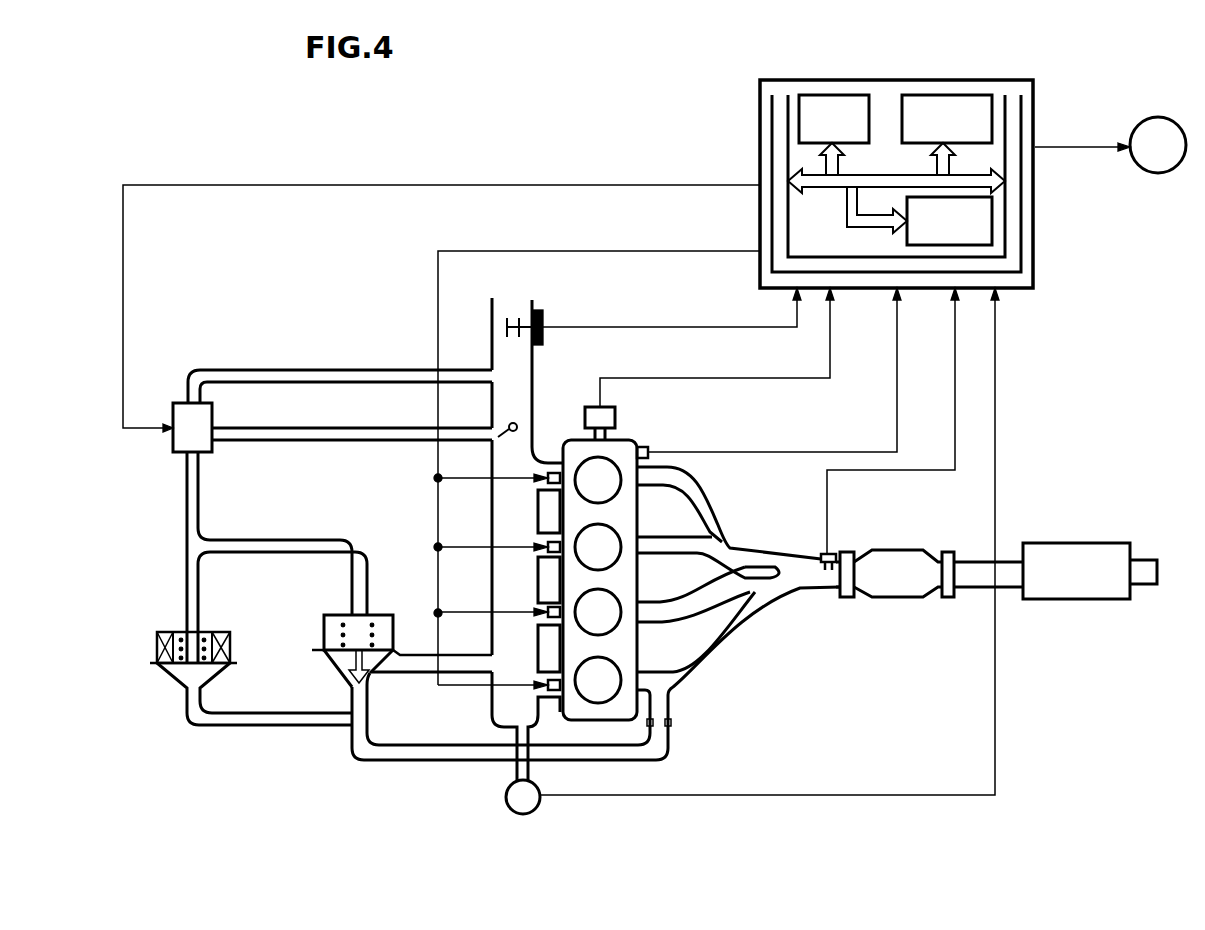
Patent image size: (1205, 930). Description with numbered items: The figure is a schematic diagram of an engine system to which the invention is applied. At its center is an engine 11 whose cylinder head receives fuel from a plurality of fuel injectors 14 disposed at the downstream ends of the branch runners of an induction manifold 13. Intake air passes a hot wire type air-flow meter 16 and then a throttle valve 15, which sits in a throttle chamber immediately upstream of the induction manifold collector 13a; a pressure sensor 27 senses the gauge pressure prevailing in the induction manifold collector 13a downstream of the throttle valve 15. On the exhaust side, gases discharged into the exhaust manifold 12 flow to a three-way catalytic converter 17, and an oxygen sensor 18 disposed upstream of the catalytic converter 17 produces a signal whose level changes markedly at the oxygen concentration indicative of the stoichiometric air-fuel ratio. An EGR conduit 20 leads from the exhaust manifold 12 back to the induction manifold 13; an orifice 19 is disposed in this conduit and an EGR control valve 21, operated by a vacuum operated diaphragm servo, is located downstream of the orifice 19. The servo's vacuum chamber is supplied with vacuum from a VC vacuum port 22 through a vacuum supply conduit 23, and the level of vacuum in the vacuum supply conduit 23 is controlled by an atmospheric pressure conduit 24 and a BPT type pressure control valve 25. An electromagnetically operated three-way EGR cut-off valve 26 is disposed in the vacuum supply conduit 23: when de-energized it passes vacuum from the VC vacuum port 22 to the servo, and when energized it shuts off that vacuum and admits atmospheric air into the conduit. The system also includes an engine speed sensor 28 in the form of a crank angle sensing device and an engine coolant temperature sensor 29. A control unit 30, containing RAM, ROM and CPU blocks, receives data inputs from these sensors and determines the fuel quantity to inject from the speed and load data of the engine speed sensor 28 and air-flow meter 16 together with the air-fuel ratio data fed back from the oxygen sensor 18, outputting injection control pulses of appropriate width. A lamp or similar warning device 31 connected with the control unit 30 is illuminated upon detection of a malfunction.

The engine 11 is at (623, 648).
The exhaust manifold 12 is at (740, 548).
The induction manifold 13 is at (517, 380).
The induction manifold collector 13a is at (487, 698).
The fuel injectors 14 is at (547, 538).
The throttle valve 15 is at (515, 422).
The hot wire type air-flow meter 16 is at (545, 322).
The three-way catalytic converter 17 is at (900, 585).
The oxygen sensor 18 is at (830, 553).
The orifice 19 is at (672, 738).
The EGR conduit 20 is at (425, 755).
The EGR control valve 21 is at (343, 667).
The VC vacuum port 22 is at (480, 425).
The vacuum supply conduit 23 is at (302, 432).
The atmospheric pressure conduit 24 is at (200, 593).
The BPT type pressure control valve 25 is at (172, 668).
The three-way EGR cut-off valve 26 is at (183, 435).
The pressure sensor 27 is at (527, 800).
The engine speed sensor 28 is at (610, 415).
The engine coolant temperature sensor 29 is at (643, 445).
The control unit 30 is at (1035, 106).
The warning device 31 is at (1160, 118).